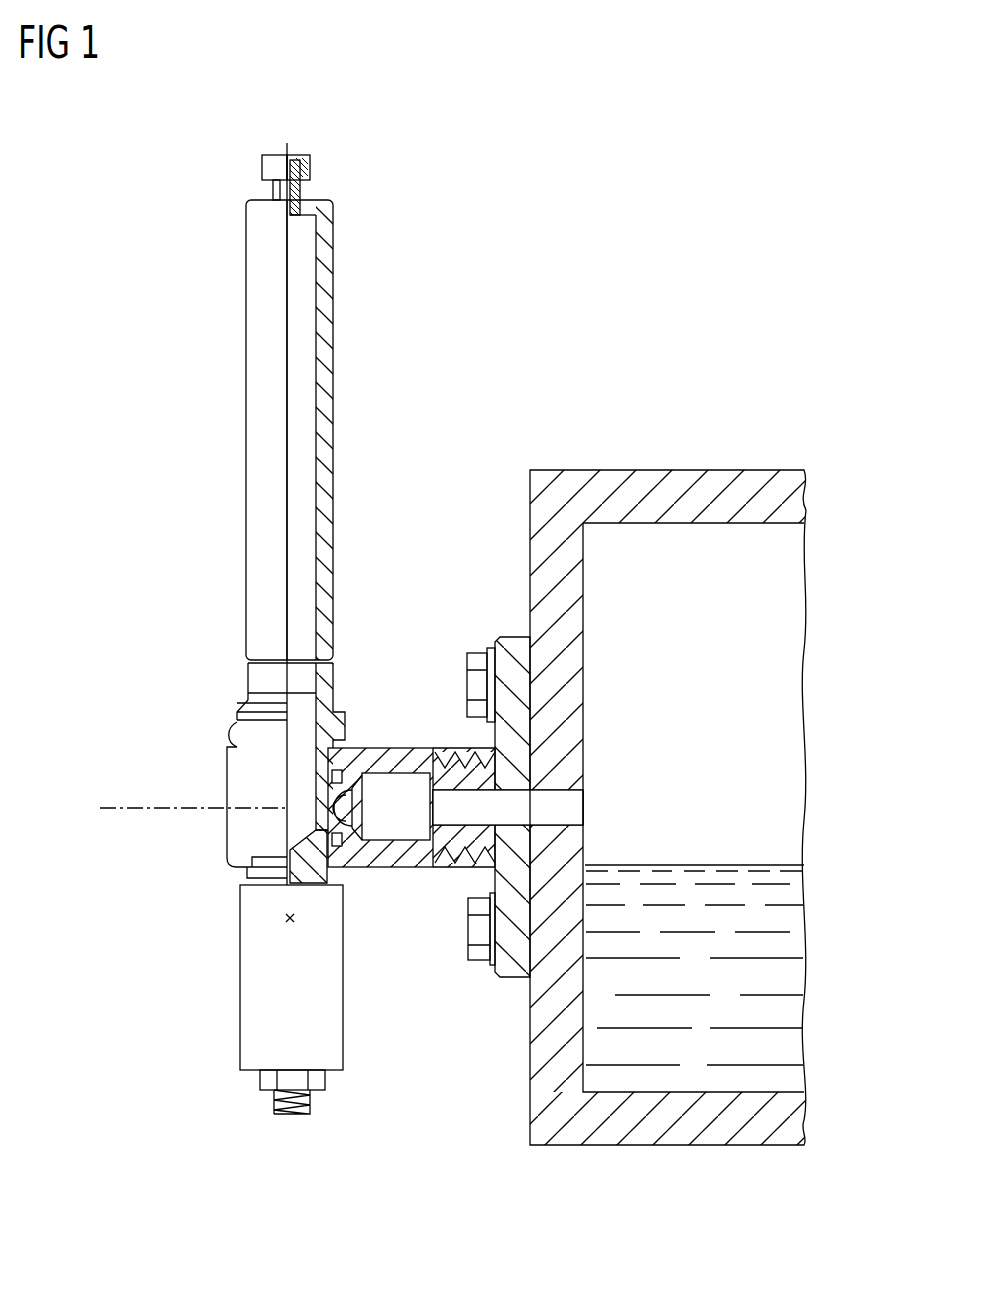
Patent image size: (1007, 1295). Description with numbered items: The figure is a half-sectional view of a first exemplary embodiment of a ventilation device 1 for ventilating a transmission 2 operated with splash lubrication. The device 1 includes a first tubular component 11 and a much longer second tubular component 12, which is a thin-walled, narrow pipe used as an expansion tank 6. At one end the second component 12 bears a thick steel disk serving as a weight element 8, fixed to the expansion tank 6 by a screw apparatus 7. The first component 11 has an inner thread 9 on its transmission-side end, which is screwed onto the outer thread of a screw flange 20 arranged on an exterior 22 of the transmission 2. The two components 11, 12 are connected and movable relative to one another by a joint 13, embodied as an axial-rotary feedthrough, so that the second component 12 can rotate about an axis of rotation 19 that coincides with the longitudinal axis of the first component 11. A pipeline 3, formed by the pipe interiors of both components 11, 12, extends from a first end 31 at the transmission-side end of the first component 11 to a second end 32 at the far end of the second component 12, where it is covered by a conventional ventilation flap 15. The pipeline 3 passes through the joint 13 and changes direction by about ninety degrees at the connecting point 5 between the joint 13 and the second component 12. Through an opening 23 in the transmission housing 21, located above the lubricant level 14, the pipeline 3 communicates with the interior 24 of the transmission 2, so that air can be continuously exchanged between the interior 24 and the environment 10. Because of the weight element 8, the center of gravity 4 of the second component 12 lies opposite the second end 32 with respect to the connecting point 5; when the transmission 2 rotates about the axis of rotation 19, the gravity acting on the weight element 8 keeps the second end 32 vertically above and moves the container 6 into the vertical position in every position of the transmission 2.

The ventilation device 1 is at (510, 343).
The transmission 2 is at (619, 760).
The pipeline 3 is at (257, 597).
The center of gravity 4 is at (286, 918).
The connecting point 5 is at (316, 806).
The expansion tank 6 is at (305, 470).
The screw apparatus 7 is at (258, 1078).
The weight element 8 is at (245, 995).
The inner thread 9 is at (466, 868).
The environment 10 is at (618, 200).
The first tubular component 11 is at (396, 868).
The second tubular component 12 is at (333, 356).
The joint 13 is at (345, 735).
The lubricant level 14 is at (710, 863).
The ventilation flap 15 is at (298, 155).
The axis of rotation 19 is at (132, 800).
The screw flange 20 is at (520, 978).
The transmission housing 21 is at (612, 473).
The exterior 22 is at (528, 526).
The opening 23 is at (583, 803).
The interior 24 is at (745, 657).
The first end 31 is at (493, 854).
The second end 32 is at (305, 277).